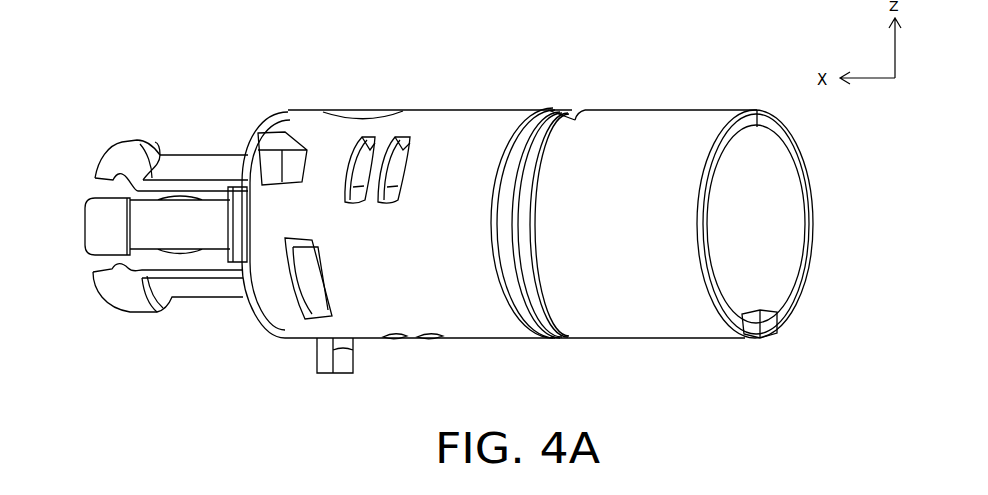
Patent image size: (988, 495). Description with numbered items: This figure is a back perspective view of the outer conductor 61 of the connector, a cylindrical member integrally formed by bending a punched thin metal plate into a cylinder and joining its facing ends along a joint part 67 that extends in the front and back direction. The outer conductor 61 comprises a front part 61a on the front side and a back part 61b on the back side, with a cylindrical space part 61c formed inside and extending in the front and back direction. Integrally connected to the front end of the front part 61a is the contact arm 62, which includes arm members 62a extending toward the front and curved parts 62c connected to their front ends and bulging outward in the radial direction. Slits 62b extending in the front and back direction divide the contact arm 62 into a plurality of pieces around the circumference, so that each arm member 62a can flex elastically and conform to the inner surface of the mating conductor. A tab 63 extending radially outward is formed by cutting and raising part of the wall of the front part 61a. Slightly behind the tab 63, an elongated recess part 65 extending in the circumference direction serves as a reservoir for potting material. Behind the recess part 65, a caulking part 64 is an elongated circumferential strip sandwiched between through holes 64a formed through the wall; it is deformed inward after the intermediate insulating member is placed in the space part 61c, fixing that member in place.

The outer conductor 61 is at (517, 120).
The front part 61a is at (475, 108).
The back part 61b is at (693, 107).
The space part 61c is at (790, 223).
The contact arm 62 is at (167, 224).
The arm member 62a is at (198, 168).
The slit 62b is at (97, 190).
The curved part 62c is at (128, 150).
The tab 63 is at (342, 375).
The caulking part 64 is at (378, 163).
The through hole 64a is at (412, 137).
The recess part 65 is at (300, 300).
The joint part 67 is at (757, 110).